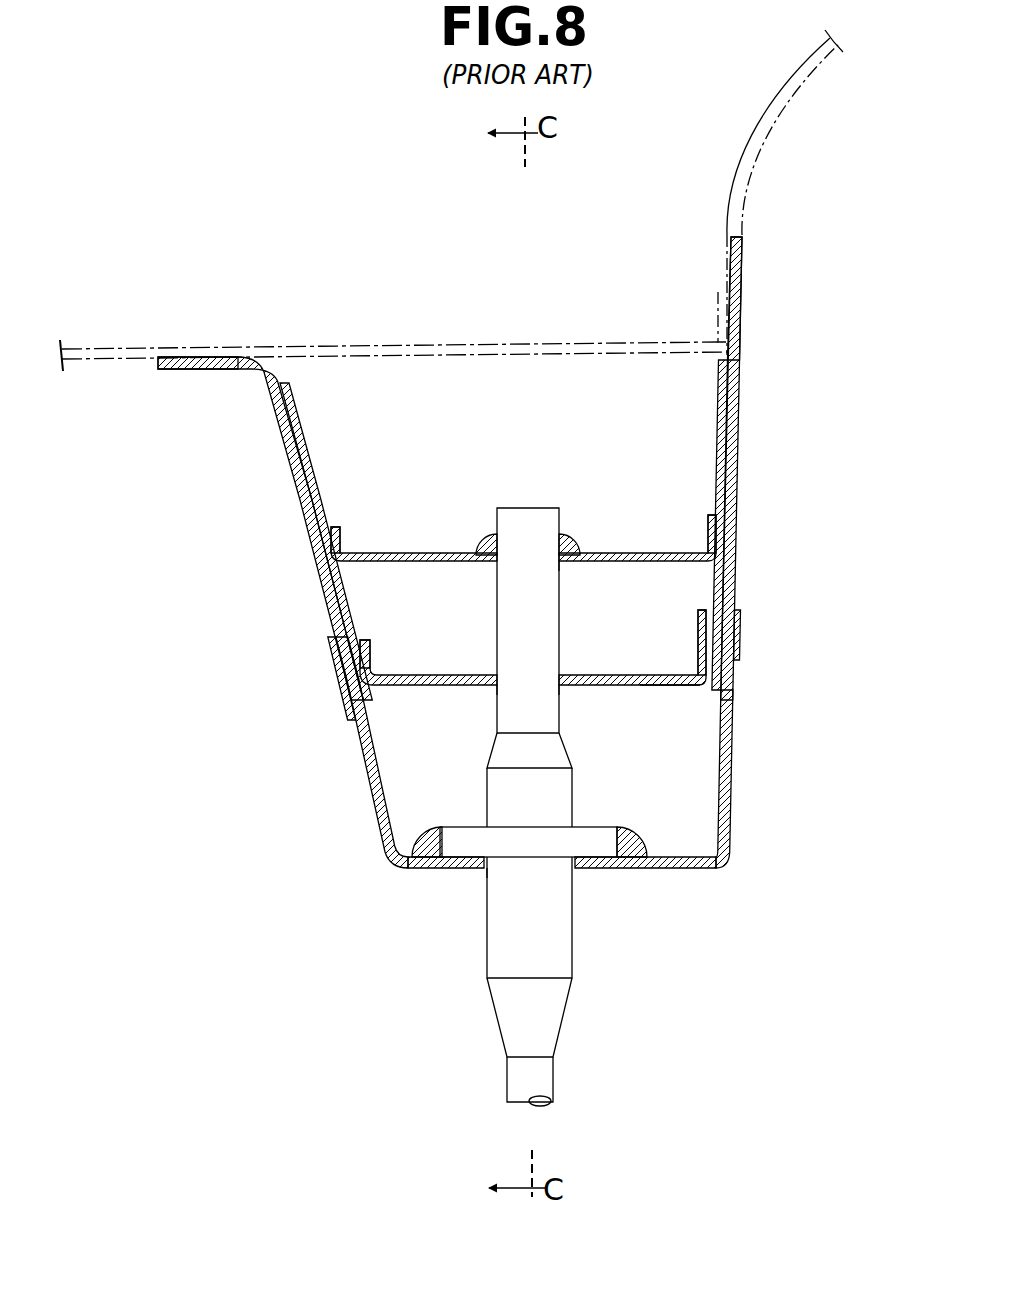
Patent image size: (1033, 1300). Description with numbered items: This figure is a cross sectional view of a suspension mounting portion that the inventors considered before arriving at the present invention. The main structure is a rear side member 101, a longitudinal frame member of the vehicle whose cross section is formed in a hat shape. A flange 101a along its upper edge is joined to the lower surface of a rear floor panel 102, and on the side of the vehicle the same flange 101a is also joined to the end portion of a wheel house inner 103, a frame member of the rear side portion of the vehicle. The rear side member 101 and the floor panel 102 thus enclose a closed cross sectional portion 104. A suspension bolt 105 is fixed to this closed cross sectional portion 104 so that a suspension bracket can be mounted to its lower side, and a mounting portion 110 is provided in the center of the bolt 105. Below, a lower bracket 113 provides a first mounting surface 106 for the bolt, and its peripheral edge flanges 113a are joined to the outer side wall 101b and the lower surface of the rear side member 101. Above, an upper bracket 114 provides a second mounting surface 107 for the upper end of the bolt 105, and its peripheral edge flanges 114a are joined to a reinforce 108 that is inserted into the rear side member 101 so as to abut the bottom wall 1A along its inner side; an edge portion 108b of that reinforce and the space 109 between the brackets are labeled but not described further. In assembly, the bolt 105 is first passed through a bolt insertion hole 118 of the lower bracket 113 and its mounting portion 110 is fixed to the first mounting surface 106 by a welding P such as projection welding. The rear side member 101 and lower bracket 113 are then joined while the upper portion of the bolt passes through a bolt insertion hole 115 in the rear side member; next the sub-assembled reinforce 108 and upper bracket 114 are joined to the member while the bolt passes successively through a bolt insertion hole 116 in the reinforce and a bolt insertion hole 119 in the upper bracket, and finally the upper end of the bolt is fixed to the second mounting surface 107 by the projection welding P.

The rear side member 101 is at (322, 596).
The flange 101a is at (212, 362).
The outer side wall 101b is at (332, 614).
The rear floor panel 102 is at (468, 345).
The wheel house inner 103 is at (762, 130).
The closed cross sectional portion 104 is at (528, 409).
The suspension bolt 105 is at (560, 1005).
The first mounting surface 106 is at (688, 854).
The second mounting surface 107 is at (441, 552).
The reinforce 108 is at (529, 628).
The peripheral edge of lower partition plate 108b is at (342, 582).
The lower chamber 109 is at (632, 729).
The mounting portion 110 is at (601, 835).
The lower bracket 113 is at (536, 767).
The peripheral edge flanges 113a is at (330, 657).
The upper bracket 114 is at (519, 498).
The peripheral edge flanges 114a is at (338, 531).
The bolt insertion hole 115 is at (489, 697).
The bolt insertion hole 116 is at (566, 664).
The bolt insertion hole 118 is at (480, 872).
The bolt insertion hole 119 is at (566, 568).
The bottom wall 1A is at (663, 690).
The welding P is at (485, 534).